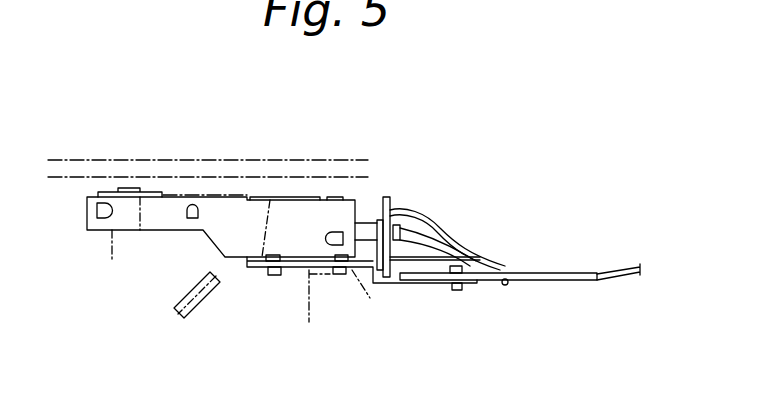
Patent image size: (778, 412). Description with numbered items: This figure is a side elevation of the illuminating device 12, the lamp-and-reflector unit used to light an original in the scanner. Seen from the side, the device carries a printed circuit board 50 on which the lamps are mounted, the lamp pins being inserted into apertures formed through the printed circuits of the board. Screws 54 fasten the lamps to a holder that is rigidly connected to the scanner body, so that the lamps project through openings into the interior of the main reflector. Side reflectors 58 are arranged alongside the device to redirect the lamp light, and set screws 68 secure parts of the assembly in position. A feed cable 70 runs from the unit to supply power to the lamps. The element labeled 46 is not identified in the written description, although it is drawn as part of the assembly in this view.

The illuminating device 12 is at (456, 134).
The tape guide 46 is at (207, 289).
The printed circuit board 50 is at (387, 198).
The screws 54 is at (423, 224).
The side reflectors 58 is at (177, 199).
The set screws 68 is at (279, 275).
The feed cable 70 is at (544, 274).